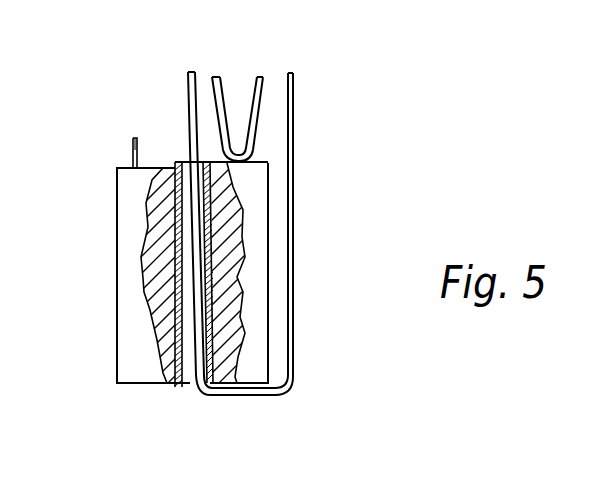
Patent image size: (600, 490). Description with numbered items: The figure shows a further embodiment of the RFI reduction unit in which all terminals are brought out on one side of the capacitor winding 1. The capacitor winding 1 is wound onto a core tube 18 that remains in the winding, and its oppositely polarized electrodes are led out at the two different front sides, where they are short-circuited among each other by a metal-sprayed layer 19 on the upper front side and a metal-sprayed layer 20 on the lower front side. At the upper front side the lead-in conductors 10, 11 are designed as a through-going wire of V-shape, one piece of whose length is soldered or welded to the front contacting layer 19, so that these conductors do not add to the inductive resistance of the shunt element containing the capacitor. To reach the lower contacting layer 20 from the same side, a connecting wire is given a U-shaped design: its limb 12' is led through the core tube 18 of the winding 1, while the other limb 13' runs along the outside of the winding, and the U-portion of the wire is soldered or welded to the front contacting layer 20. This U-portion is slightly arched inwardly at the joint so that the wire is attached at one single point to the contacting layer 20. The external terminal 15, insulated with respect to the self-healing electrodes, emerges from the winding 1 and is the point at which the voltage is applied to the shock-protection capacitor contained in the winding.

The capacitor winding 1 is at (140, 343).
The lead-in conductor 10 is at (213, 80).
The lead-in conductor 11 is at (257, 80).
The limb of U-shaped connecting wire 12' is at (153, 90).
The limb of U-shaped connecting wire 13' is at (329, 133).
The external terminal 15 is at (133, 153).
The core tube 18 is at (178, 387).
The metal-sprayed layer 19 is at (262, 163).
The metal-sprayed layer 20 is at (248, 388).